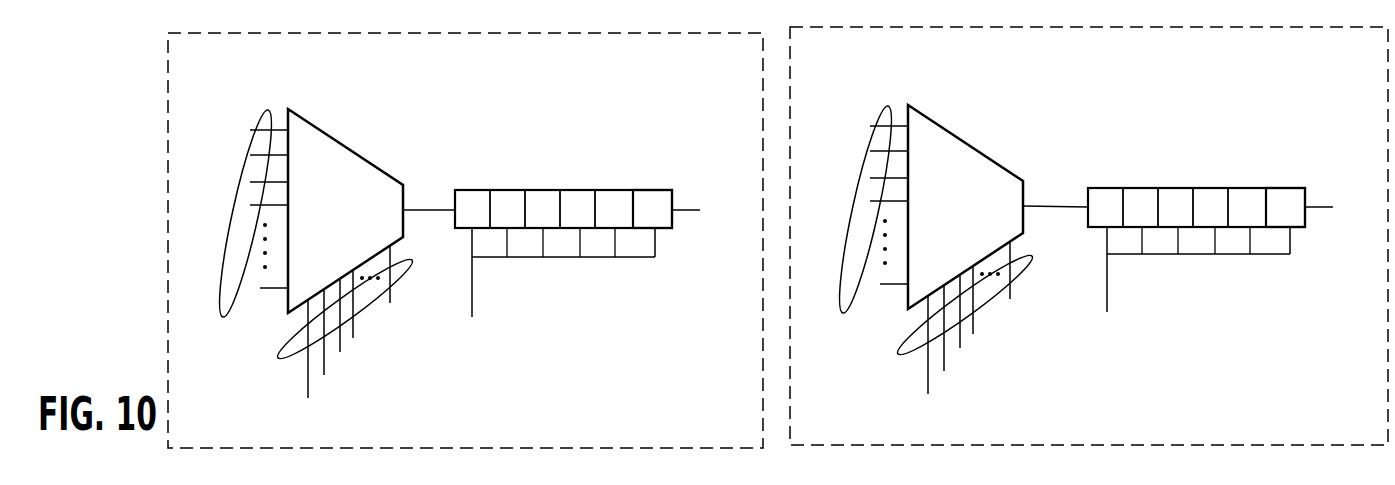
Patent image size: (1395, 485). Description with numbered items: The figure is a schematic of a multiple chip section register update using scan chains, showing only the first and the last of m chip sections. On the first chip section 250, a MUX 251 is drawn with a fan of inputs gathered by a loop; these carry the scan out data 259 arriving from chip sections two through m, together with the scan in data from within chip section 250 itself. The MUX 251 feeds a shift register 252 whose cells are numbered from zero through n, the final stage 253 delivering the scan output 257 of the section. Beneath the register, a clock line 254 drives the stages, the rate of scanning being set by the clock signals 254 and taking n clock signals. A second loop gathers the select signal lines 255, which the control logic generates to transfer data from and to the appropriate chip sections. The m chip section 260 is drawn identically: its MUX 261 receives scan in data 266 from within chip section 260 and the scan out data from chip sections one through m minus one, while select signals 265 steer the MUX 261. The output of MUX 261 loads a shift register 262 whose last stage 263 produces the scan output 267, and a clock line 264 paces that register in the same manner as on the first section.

The first chip section 250 is at (723, 75).
The MUX 251 is at (353, 152).
The shift register 252 is at (470, 190).
The shift register output stage 253 is at (665, 190).
The clock signals 254 is at (472, 292).
The select signal 255 is at (280, 357).
The scan output line 257 is at (682, 212).
The scan out data 259 is at (223, 317).
The m chip section 260 is at (1357, 72).
The MUX 261 is at (973, 148).
The shift register 262 is at (1103, 188).
The shift register output stage 263 is at (1298, 188).
The clock line 264 is at (1107, 289).
The select signals 265 is at (900, 353).
The scan in data 266 is at (843, 313).
The scan output line 267 is at (1315, 209).